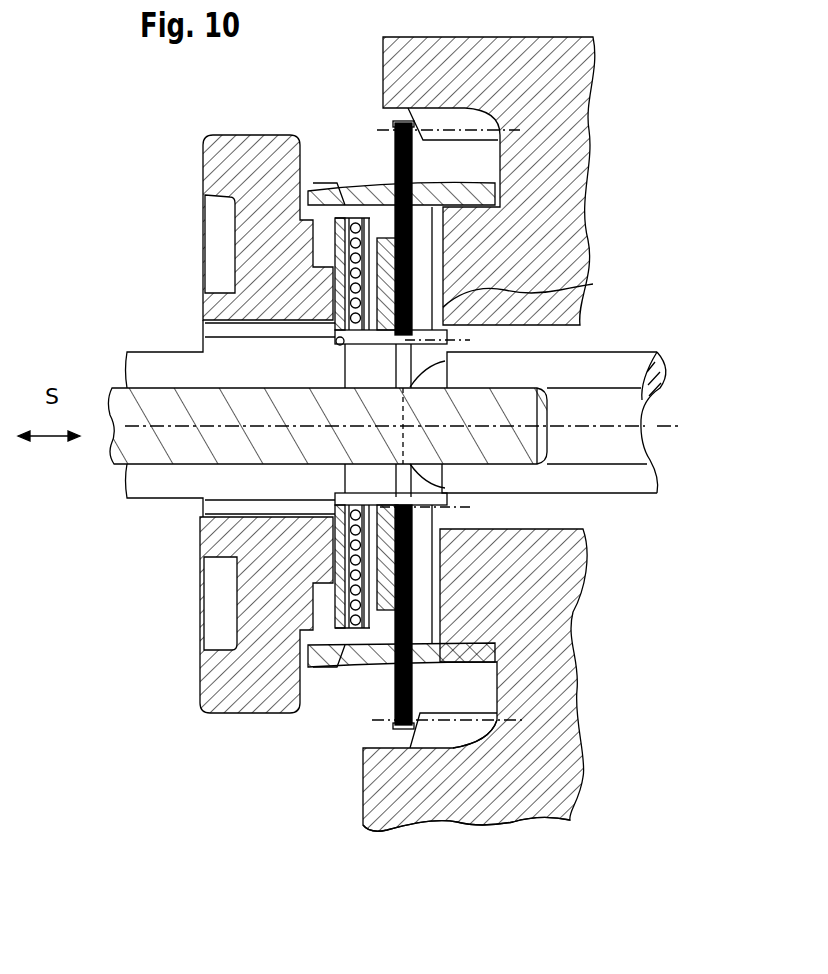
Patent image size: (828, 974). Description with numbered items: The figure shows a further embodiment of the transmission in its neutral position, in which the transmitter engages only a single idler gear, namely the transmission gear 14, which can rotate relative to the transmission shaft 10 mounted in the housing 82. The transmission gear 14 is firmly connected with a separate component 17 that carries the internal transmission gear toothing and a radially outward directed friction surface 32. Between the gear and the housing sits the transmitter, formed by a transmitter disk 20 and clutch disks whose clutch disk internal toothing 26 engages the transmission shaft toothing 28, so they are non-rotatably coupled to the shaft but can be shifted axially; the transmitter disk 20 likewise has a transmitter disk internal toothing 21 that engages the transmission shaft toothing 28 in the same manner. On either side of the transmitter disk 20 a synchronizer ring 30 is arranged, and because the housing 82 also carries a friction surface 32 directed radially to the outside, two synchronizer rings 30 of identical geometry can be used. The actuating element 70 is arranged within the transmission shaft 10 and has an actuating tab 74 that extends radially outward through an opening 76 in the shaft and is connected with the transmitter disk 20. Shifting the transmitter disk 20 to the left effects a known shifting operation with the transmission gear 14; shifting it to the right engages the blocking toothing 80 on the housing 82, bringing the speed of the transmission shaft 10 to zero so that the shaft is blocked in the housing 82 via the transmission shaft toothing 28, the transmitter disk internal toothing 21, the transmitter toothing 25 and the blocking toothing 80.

The transmission shaft 10 is at (167, 371).
The transmission gear 14 is at (222, 162).
The separate component 17 is at (338, 182).
The transmitter disk 20 is at (387, 697).
The transmitter disk internal toothing 21 is at (403, 493).
The transmitter toothing 25 is at (383, 720).
The clutch disk internal toothing 26 is at (383, 500).
The transmission shaft toothing 28 is at (585, 283).
The synchronizer ring 30 is at (357, 189).
The friction surface 32 is at (500, 640).
The actuating element 70 is at (190, 447).
The actuating tab 74 is at (448, 362).
The opening 76 is at (356, 372).
The blocking toothing 80 is at (452, 732).
The housing 82 is at (507, 813).